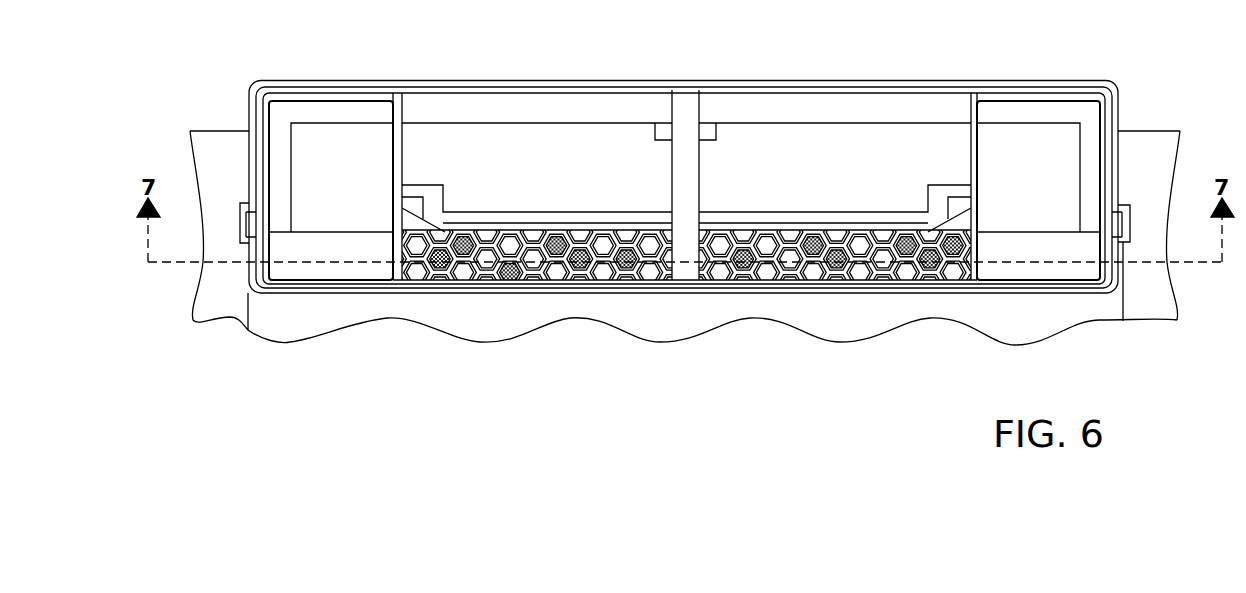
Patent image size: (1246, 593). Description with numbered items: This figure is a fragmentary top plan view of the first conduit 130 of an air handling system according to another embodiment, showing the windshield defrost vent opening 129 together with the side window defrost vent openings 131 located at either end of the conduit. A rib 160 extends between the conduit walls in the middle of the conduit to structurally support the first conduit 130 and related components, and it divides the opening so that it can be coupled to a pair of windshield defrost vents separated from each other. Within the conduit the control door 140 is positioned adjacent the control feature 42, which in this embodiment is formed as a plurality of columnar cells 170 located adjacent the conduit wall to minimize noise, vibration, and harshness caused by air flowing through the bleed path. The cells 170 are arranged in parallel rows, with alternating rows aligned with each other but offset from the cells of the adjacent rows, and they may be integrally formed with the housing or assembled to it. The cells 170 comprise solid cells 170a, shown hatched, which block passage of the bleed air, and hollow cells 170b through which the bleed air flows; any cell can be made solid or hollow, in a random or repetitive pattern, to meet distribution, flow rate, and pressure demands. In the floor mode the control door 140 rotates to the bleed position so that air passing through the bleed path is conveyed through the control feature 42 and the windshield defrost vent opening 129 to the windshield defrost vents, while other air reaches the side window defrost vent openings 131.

The first conduit 130 is at (321, 76).
The windshield defrost vent opening 129 is at (549, 97).
The rib 160 is at (688, 135).
The control door 140 is at (832, 189).
The side window defrost vent opening 131 is at (294, 280).
The columnar cells 170 is at (684, 308).
The solid cells 170a is at (490, 268).
The hollow cells 170b is at (553, 281).
The control feature 42 is at (650, 270).